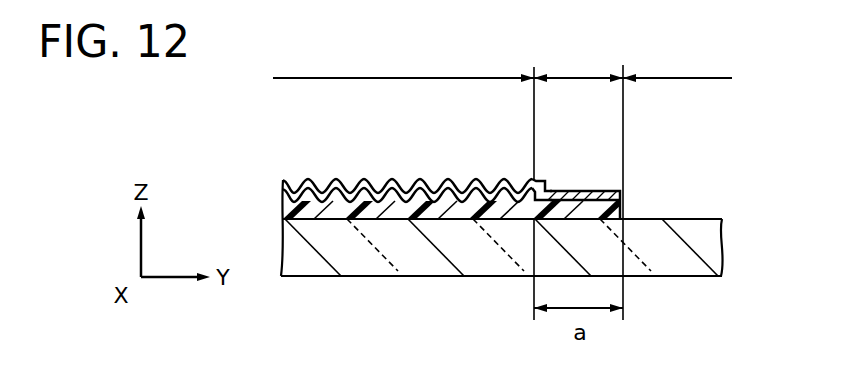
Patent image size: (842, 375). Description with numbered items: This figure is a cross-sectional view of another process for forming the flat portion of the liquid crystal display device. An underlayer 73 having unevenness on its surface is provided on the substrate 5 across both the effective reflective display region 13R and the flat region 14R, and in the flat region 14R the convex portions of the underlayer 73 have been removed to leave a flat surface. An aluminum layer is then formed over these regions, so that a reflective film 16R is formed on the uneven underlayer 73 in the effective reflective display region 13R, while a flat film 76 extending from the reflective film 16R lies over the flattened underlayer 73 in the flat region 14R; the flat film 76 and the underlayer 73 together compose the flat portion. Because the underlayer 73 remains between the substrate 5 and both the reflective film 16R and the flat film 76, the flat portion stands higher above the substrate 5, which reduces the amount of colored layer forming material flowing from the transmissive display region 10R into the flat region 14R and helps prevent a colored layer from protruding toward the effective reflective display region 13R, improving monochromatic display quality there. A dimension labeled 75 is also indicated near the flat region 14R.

The substrate 5 is at (305, 263).
The underlayer 73 is at (425, 214).
The reflective film 16R is at (402, 182).
The flat portion 75 is at (572, 178).
The flat film 76 is at (587, 186).
The effective reflective display region 13R is at (403, 181).
The flat region 14R is at (578, 62).
The transmissive display region 10R is at (677, 181).